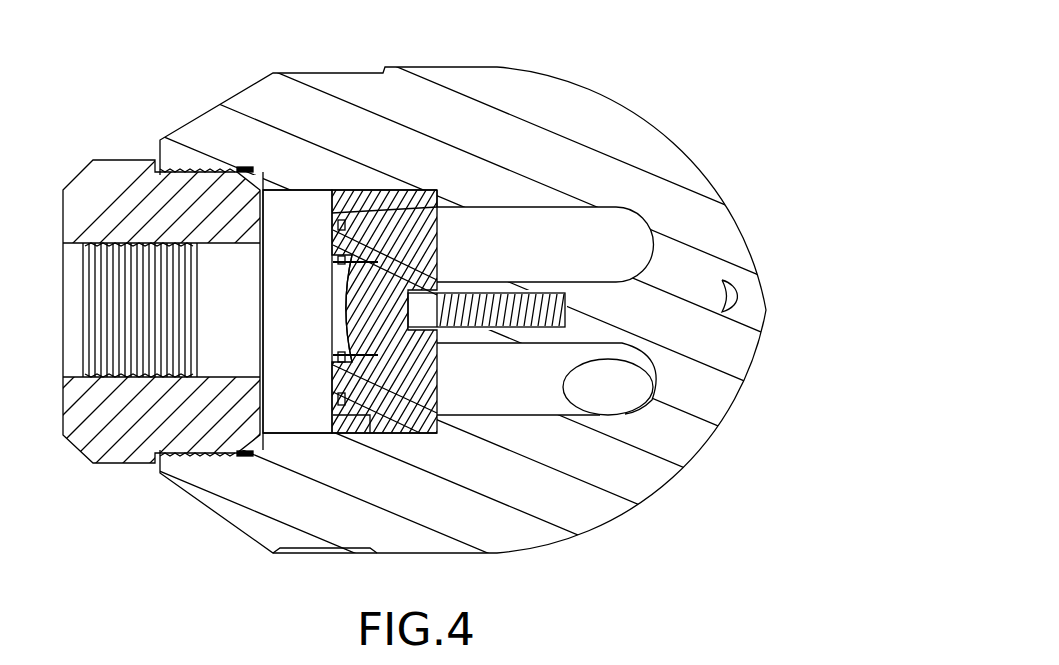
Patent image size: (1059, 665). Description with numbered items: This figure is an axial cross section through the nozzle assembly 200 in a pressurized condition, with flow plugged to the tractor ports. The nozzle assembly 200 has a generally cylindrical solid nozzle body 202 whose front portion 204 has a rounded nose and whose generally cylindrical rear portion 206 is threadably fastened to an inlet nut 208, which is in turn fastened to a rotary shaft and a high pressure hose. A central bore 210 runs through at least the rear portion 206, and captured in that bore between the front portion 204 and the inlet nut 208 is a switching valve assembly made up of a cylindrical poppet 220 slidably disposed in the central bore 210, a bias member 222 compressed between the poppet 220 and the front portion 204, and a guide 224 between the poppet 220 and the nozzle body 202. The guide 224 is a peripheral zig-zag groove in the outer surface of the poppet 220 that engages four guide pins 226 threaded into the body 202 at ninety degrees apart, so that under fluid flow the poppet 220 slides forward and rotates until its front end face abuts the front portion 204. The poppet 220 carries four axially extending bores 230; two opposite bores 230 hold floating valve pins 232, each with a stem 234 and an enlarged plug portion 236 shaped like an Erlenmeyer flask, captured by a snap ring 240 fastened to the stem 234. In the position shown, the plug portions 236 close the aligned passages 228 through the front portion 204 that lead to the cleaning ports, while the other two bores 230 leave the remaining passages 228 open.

The nozzle assembly 200 is at (625, 63).
The nozzle body 202 is at (645, 96).
The front portion 204 is at (687, 170).
The rear portion 206 is at (450, 88).
The inlet nut 208 is at (127, 176).
The central bore 210 is at (285, 200).
The poppet 220 is at (393, 432).
The bias member 222 is at (480, 330).
The guide 224 is at (352, 200).
The guide pins 226 is at (340, 432).
The passages 228 is at (547, 215).
The axially extending bores 230 is at (385, 245).
The valve pins 232 is at (432, 196).
The stem 234 is at (353, 228).
The enlarged plug portion 236 is at (437, 204).
The snap ring 240 is at (337, 263).